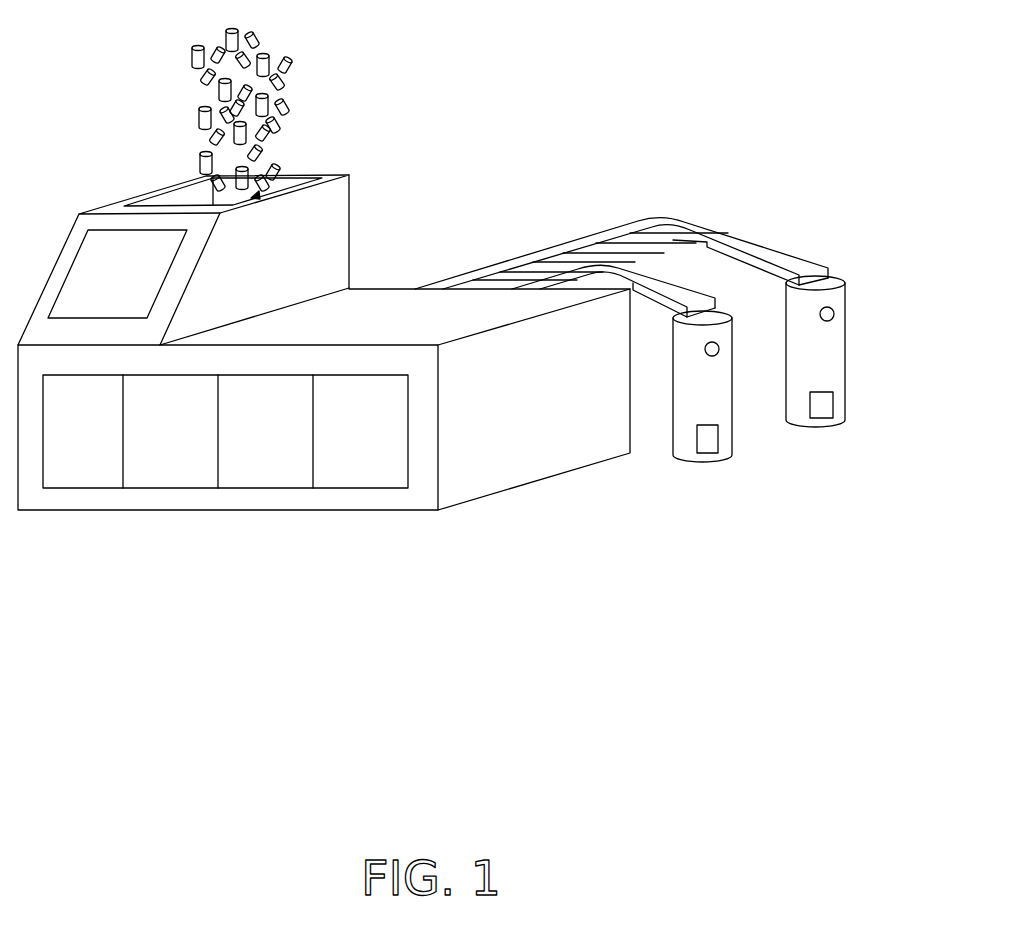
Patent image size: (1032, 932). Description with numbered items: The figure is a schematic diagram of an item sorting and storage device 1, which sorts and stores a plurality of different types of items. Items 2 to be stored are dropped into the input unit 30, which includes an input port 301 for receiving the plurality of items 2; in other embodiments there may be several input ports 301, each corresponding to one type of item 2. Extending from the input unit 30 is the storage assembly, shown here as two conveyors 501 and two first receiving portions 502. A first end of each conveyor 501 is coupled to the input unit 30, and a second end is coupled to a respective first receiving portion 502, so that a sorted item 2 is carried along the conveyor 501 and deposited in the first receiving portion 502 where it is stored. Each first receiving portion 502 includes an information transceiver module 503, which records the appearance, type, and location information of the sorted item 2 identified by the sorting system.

The item sorting and storage device 1 is at (443, 102).
The item 2 is at (192, 54).
The input unit 30 is at (235, 252).
The input port 301 is at (178, 193).
The conveyor 501 is at (765, 255).
The first receiving portion 502 is at (802, 369).
The information transceiver module 503 is at (834, 319).